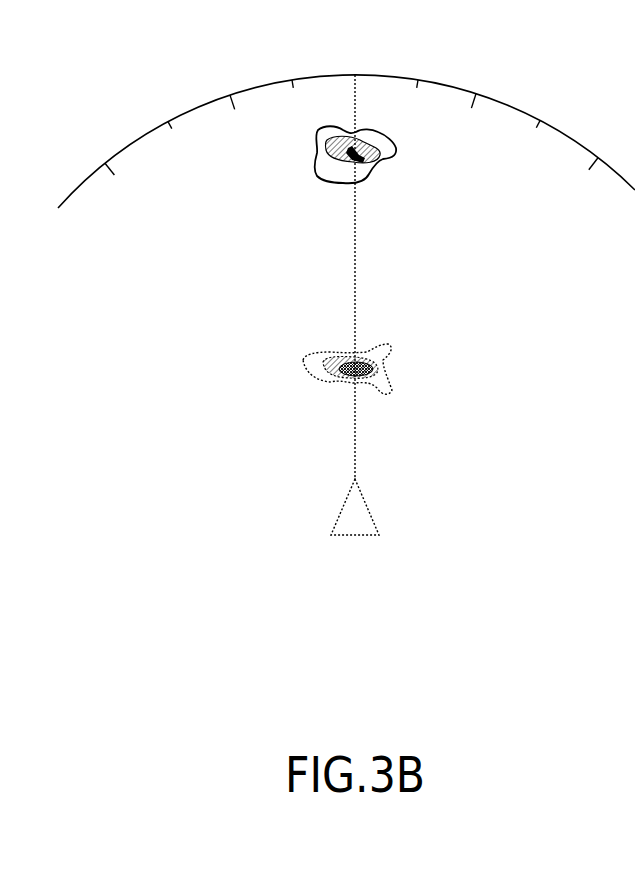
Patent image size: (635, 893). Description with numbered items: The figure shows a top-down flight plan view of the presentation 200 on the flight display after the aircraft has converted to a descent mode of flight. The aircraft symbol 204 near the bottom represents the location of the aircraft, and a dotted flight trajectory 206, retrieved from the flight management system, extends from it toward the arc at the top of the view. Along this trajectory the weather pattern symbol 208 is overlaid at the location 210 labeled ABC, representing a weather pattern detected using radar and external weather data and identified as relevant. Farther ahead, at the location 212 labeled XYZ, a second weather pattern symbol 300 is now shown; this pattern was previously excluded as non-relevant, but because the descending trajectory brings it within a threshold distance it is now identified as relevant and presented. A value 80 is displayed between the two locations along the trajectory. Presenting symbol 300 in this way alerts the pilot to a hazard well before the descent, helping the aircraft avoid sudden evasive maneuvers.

The presentation 200 is at (137, 68).
The aircraft symbol 204 is at (370, 509).
The flight trajectory 206 is at (356, 438).
The weather pattern symbol 208 is at (390, 344).
The location 210 is at (299, 328).
The location 212 is at (298, 215).
The relevant weather pattern symbol 300 is at (392, 160).
The distance value 80 is at (330, 269).